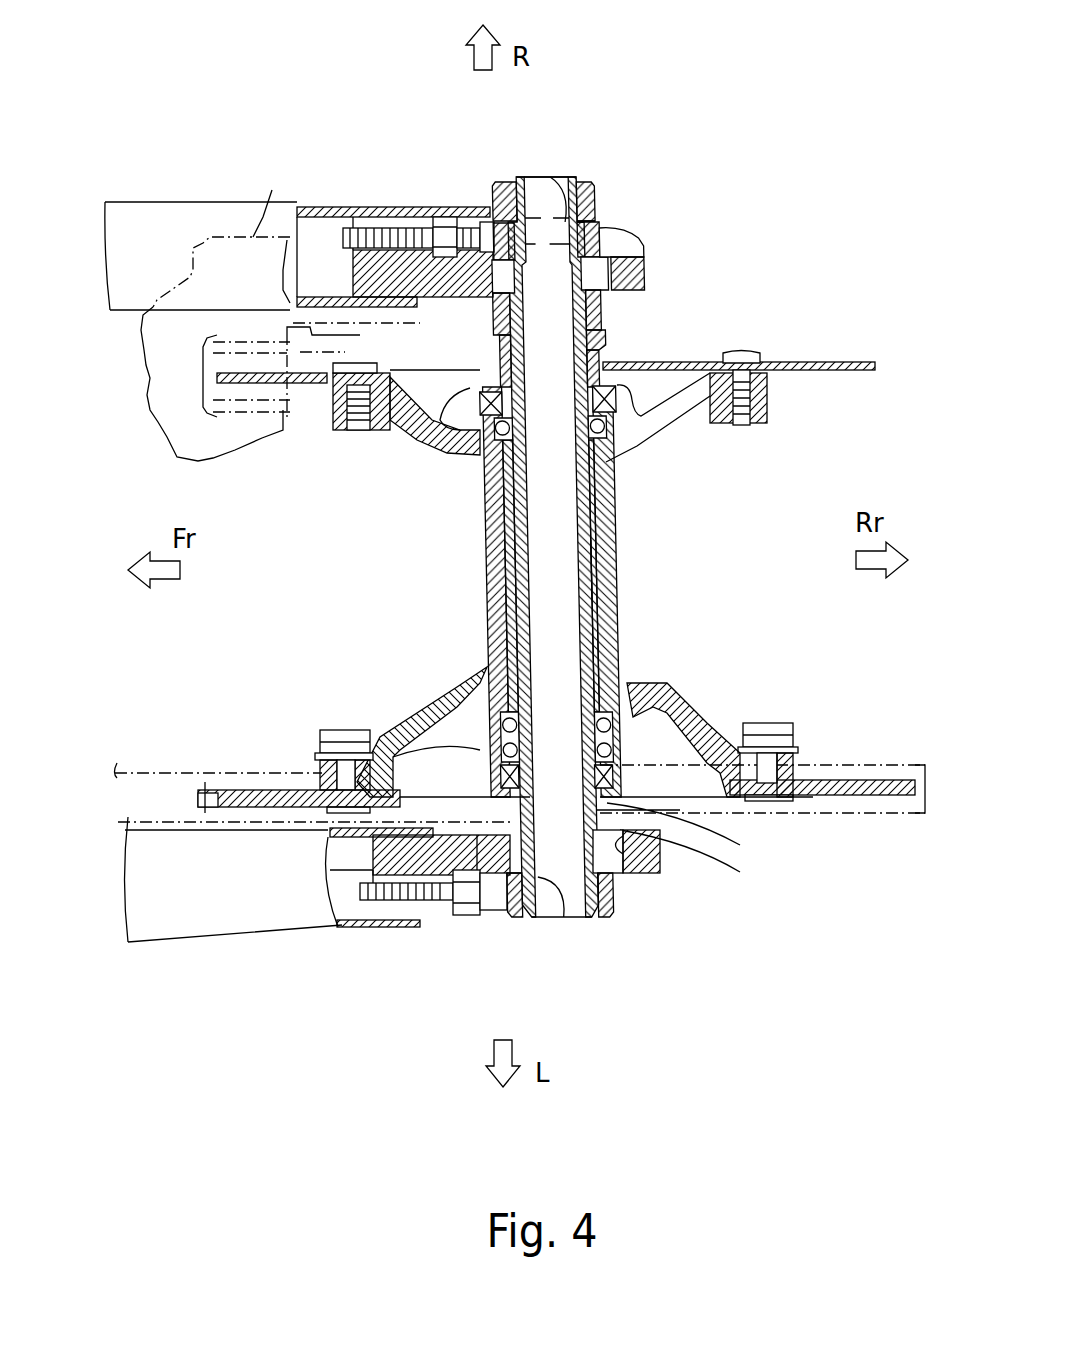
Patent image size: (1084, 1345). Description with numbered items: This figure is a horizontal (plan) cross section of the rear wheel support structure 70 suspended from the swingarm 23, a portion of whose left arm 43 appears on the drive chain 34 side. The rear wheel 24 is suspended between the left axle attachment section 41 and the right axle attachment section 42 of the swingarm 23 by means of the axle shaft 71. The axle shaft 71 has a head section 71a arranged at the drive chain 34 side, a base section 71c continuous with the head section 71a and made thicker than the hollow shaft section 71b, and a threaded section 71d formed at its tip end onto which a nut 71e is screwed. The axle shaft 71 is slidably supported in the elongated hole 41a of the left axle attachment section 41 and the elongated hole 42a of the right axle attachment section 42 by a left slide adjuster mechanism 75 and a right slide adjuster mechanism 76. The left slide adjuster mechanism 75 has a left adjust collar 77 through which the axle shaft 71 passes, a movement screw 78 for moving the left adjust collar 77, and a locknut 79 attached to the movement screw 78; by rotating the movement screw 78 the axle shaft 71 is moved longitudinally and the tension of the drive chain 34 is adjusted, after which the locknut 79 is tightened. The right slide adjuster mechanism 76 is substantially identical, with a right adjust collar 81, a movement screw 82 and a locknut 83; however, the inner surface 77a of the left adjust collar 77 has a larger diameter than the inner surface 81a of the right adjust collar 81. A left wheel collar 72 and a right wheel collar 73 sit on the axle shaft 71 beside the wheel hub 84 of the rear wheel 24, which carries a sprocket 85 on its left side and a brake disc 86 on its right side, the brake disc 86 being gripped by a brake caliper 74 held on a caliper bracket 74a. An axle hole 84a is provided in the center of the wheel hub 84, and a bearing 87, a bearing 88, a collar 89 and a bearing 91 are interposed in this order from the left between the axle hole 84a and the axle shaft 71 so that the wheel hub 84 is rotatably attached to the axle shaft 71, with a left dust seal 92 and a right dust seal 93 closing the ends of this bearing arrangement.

The rear wheel support structure 70 is at (707, 52).
The swingarm 23 is at (146, 150).
The right axle attachment section 42 is at (199, 185).
The brake caliper 74 is at (265, 228).
The locknut 83 is at (432, 220).
The right slide adjuster mechanism 76 is at (461, 179).
The movement screw 82 is at (503, 200).
The nut 71e is at (527, 183).
The inner surface of right adjust collar 81a is at (577, 185).
The threaded section 71d is at (593, 213).
The right adjust collar 81 is at (600, 212).
The elongated hole 42a is at (642, 240).
The caliper bracket 74a is at (607, 288).
The rear wheel 24 is at (706, 327).
The right wheel collar 73 is at (628, 352).
The brake disc 86 is at (840, 360).
The right dust seal 93 is at (410, 445).
The bearing 91 is at (483, 450).
The collar 89 is at (500, 590).
The bearing 88 is at (512, 700).
The bearing 87 is at (470, 700).
The left dust seal 92 is at (410, 720).
The drive chain 34 is at (152, 777).
The hollow shaft section 71b is at (592, 577).
The wheel hub 84 is at (706, 434).
The axle hole 84a is at (617, 620).
The sprocket 85 is at (845, 790).
The left wheel collar 72 is at (650, 828).
The elongated hole 41a is at (680, 856).
The left axle attachment section 41 is at (668, 862).
The base section 71c is at (613, 882).
The head section 71a is at (612, 938).
The axle shaft 71 is at (598, 945).
The inner surface of left adjust collar 77a is at (570, 935).
The left adjust collar 77 is at (540, 935).
The movement screw 78 is at (497, 925).
The locknut 79 is at (445, 933).
The left slide adjuster mechanism 75 is at (468, 942).
The left arm 43 is at (222, 950).